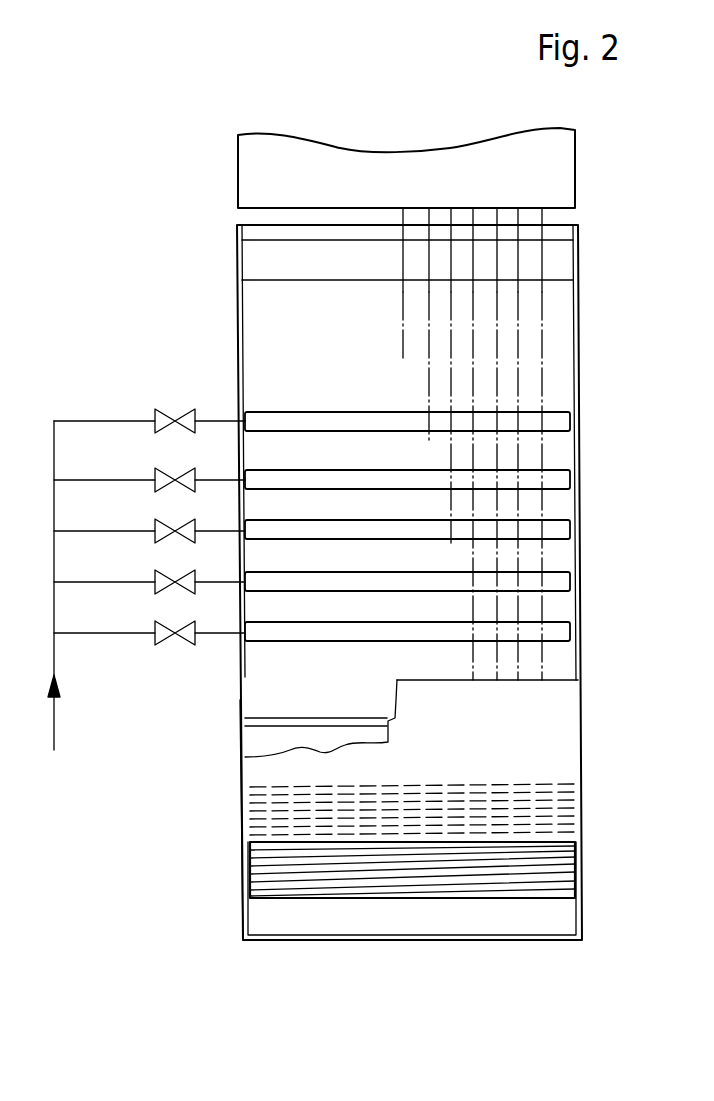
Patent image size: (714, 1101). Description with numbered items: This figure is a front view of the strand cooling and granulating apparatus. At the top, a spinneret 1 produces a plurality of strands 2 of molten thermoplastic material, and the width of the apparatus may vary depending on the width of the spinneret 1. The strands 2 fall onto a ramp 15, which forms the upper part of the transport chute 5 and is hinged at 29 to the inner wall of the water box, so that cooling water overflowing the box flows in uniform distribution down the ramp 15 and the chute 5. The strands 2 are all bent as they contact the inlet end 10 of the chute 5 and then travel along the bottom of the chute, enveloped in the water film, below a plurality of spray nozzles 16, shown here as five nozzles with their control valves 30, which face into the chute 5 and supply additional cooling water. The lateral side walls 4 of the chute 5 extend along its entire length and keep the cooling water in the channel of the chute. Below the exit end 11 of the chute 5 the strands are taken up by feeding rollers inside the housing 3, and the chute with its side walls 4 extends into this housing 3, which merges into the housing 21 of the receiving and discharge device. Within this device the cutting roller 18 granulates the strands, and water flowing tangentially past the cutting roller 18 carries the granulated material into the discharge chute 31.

The spinneret 1 is at (557, 182).
The strands 2 is at (520, 265).
The housing 3 is at (570, 732).
The side walls 4 is at (579, 388).
The transport chute 5 is at (565, 345).
The inlet end of the chute 10 is at (282, 284).
The outlet end of the chute 11 is at (272, 716).
The ramp 15 is at (261, 258).
The spray nozzles 16 is at (565, 421).
The cutting roller 18 is at (310, 885).
The housing 21 is at (457, 921).
The hinge 29 is at (267, 237).
The valves 30 is at (155, 628).
The discharge chute 31 is at (243, 912).